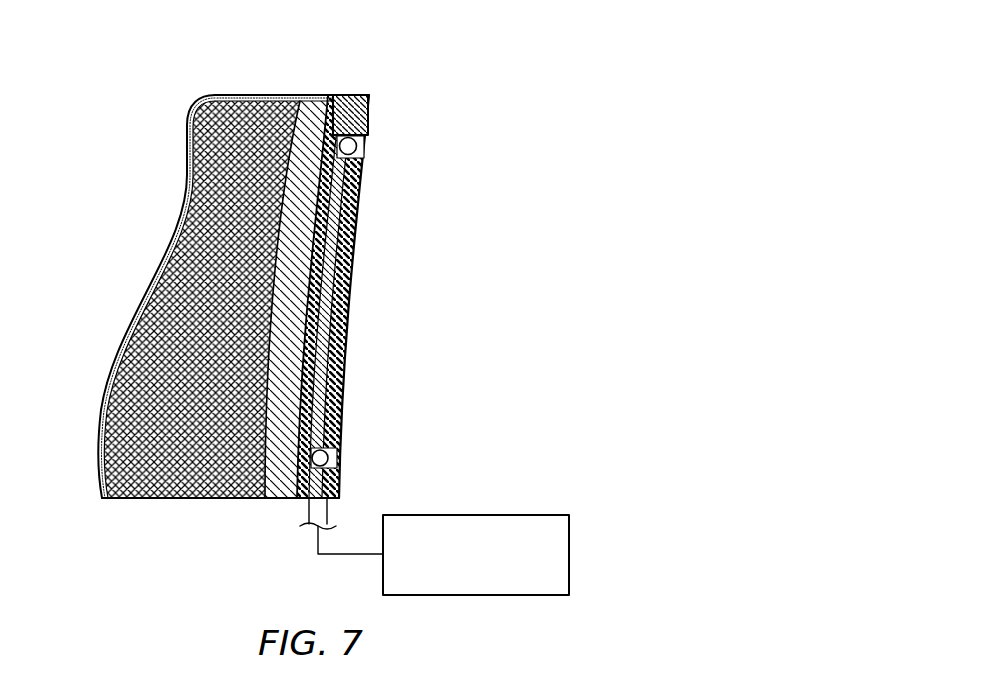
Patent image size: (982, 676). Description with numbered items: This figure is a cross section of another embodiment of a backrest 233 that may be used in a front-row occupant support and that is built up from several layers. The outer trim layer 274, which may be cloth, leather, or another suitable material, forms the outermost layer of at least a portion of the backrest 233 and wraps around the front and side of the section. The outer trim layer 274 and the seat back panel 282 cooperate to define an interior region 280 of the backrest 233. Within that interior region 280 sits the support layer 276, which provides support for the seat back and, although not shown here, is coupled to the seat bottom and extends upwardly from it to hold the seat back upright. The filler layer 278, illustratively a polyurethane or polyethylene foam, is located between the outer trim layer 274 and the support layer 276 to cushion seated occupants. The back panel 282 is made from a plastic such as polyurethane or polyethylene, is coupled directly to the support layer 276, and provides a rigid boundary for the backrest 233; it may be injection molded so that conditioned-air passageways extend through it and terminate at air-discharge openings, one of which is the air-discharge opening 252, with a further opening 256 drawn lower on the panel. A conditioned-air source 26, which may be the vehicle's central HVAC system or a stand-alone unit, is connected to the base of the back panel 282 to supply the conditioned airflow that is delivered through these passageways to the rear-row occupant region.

The backrest 233 is at (262, 269).
The filler layer 278 is at (253, 124).
The interior region 280 is at (210, 182).
The outer trim layer 274 is at (277, 101).
The support layer 276 is at (316, 120).
The seat back panel 282 is at (369, 108).
The air-discharge opening 252 is at (377, 147).
The lower air port 256 is at (344, 456).
The conditioned-air source 26 is at (569, 553).